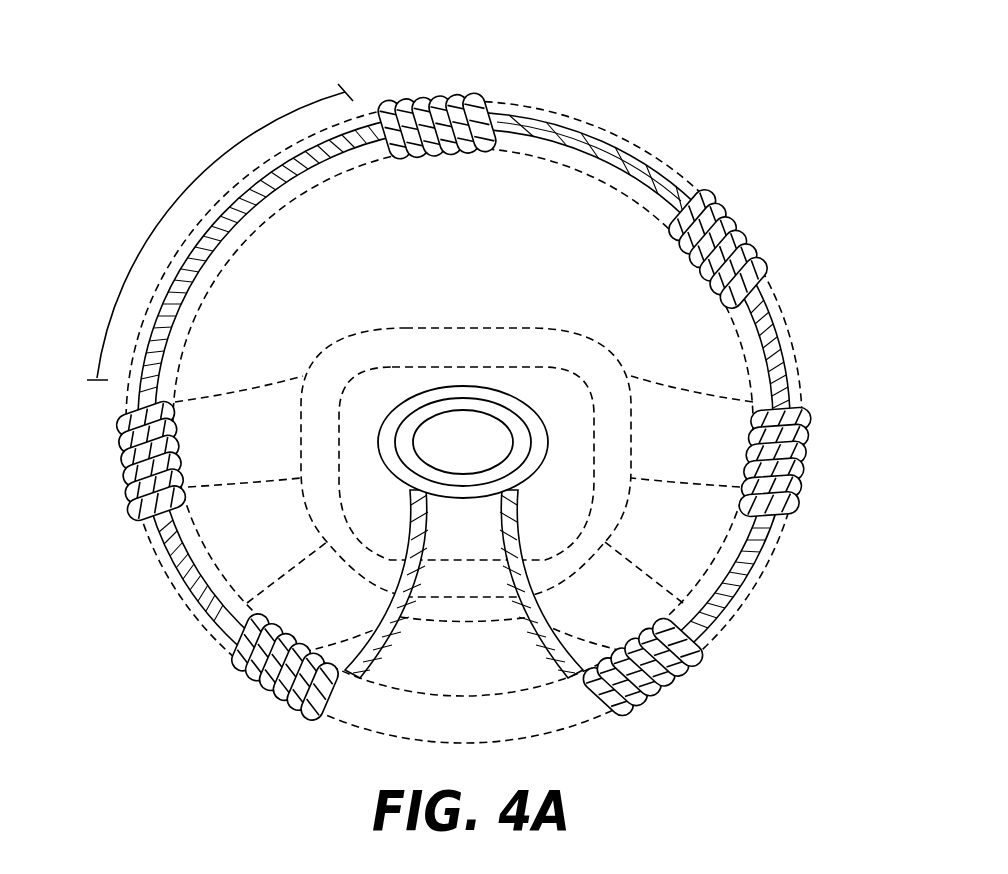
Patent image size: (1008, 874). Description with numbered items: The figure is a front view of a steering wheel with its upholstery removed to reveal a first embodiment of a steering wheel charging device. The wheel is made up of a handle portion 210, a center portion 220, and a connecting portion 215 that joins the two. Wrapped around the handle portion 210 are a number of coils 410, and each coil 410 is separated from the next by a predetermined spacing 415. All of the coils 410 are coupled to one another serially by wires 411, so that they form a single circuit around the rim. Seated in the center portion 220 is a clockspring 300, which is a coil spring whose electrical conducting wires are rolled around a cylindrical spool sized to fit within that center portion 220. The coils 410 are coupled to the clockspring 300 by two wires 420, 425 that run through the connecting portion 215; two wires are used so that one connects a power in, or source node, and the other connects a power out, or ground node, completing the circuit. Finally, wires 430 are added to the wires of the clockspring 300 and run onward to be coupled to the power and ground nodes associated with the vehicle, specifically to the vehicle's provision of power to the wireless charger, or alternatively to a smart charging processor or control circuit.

The handle portion 210 is at (573, 115).
The connecting portion 215 is at (230, 394).
The center portion 220 is at (433, 327).
The clockspring 300 is at (479, 455).
The coils 410 is at (462, 95).
The wires 411 is at (190, 597).
The predetermined spacing 415 is at (160, 212).
The wire 420 is at (517, 519).
The wire 425 is at (410, 518).
The wires 430 is at (541, 414).